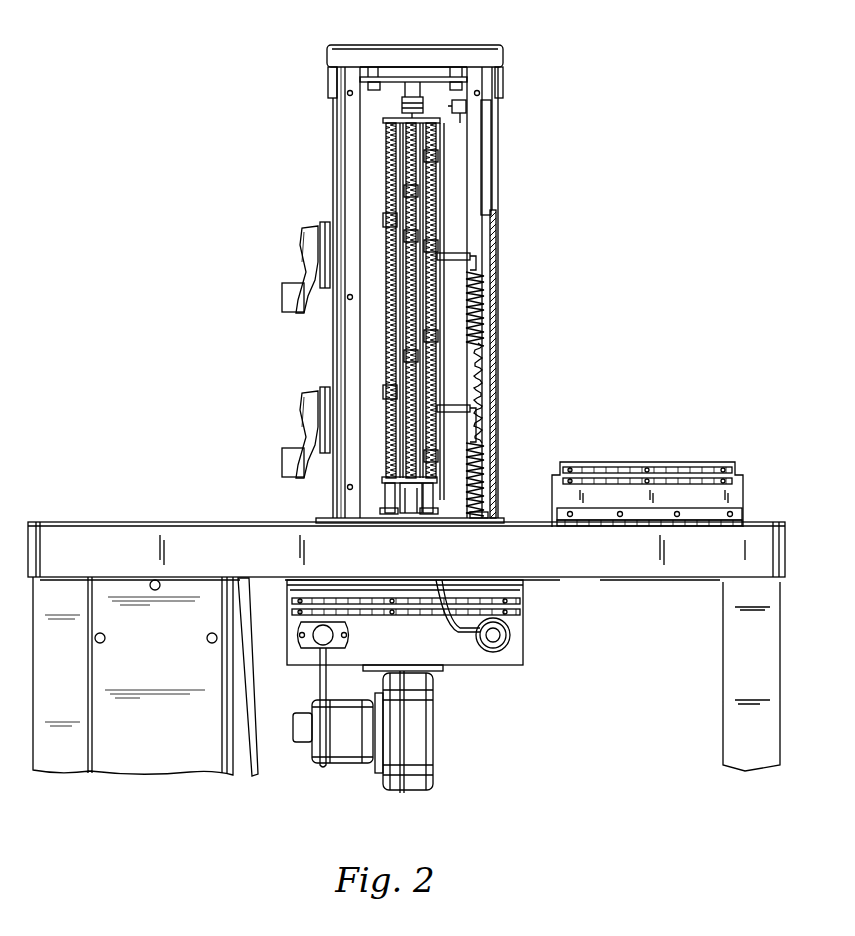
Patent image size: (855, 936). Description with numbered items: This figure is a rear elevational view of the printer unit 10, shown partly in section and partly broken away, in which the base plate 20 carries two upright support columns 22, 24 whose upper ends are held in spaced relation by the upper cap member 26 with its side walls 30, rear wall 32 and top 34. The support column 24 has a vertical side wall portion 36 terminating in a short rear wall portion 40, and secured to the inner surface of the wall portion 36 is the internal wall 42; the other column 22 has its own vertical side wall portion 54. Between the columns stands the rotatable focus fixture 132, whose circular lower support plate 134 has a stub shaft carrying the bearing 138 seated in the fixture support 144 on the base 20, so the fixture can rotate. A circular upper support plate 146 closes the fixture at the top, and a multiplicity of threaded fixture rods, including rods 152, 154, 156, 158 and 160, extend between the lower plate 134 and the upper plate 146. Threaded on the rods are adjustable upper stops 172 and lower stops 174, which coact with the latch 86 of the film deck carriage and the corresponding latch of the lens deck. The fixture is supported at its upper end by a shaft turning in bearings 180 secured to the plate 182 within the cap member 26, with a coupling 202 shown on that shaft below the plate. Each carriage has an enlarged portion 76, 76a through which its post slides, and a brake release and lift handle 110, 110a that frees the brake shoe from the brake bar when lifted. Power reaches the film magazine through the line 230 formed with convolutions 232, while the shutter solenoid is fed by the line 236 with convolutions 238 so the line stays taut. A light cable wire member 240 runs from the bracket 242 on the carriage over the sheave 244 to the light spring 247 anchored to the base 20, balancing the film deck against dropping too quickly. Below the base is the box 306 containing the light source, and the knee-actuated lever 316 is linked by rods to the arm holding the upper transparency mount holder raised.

The machine table 10 is at (524, 530).
The base plate 20 is at (505, 520).
The upright support column 22 is at (330, 162).
The upright support column 24 is at (500, 215).
The upper cap member 26 is at (325, 55).
The side walls 30 is at (328, 71).
The rear wall 32 is at (472, 52).
The top 34 is at (368, 46).
The vertical side wall portion 36 is at (497, 325).
The short rear wall portion 40 is at (489, 202).
The internal wall 42 is at (465, 390).
The vertical side wall portion 54 is at (333, 364).
The enlarged portion 76 is at (325, 224).
The enlarged portion 76a is at (325, 389).
The latch 86 is at (440, 252).
The brake release and lift handle 110 is at (282, 297).
The brake release and lift handle 110a is at (282, 467).
The rotatable focus fixture 132 is at (442, 345).
The circular lower support plate 134 is at (434, 480).
The bearing 138 is at (436, 491).
The fixture support 144 is at (415, 521).
The circular upper support plate 146 is at (428, 124).
The fixture rod 152 is at (424, 190).
The fixture rod 154 is at (436, 204).
The fixture rod 156 is at (396, 138).
The fixture rod 158 is at (407, 158).
The fixture rod 160 is at (404, 190).
The upper stop 172 is at (385, 224).
The lower stop 174 is at (385, 392).
The bearings 180 is at (418, 76).
The plate 182 is at (385, 90).
The coupling nut 202 is at (422, 104).
The line 230 is at (478, 270).
The convolutions 232 is at (484, 302).
The line 236 is at (480, 426).
The convolutions 238 is at (483, 466).
The light cable wire member 240 is at (492, 252).
The bracket 242 is at (492, 512).
The sheave 244 is at (466, 118).
The light spring 247 is at (480, 392).
The box 306 is at (523, 588).
The knee-actuated lever 316 is at (255, 765).